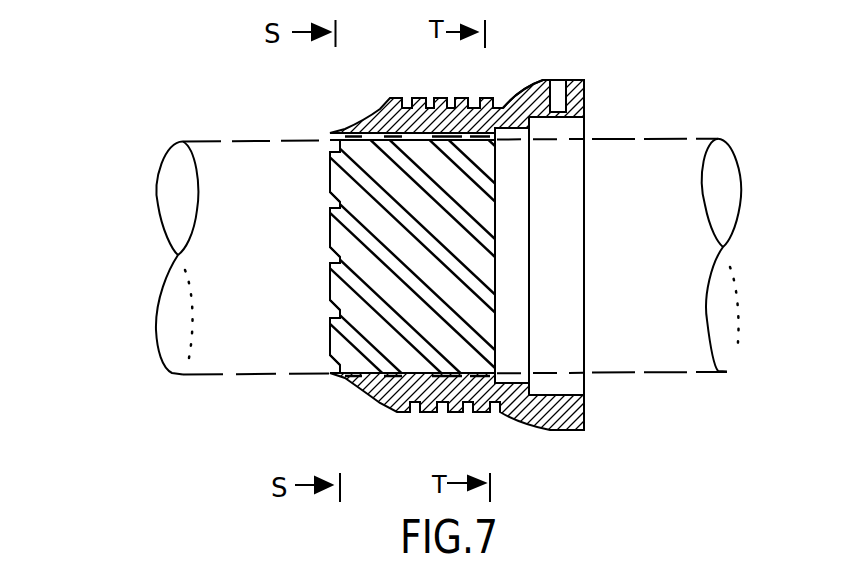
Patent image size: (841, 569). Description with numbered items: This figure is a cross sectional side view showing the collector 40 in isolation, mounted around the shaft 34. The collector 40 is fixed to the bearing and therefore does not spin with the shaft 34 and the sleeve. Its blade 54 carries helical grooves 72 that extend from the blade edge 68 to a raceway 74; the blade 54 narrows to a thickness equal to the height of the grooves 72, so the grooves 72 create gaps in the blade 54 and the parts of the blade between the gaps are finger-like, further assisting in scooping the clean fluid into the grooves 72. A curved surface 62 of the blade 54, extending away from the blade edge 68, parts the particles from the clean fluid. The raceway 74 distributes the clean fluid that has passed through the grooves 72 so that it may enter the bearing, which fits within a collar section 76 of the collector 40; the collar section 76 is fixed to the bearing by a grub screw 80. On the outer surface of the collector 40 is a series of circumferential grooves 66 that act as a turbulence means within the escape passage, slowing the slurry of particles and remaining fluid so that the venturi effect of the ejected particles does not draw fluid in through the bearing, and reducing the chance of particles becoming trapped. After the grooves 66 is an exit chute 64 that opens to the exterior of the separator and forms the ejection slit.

The shaft 34 is at (245, 254).
The collector 40 is at (138, 144).
The blade 54 is at (340, 133).
The curved surface 62 is at (373, 118).
The exit chute 64 is at (525, 92).
The circumferential grooves 66 is at (432, 98).
The blade edge 68 is at (333, 338).
The grooves 72 is at (337, 243).
The raceway 74 is at (507, 172).
The collar section 76 is at (563, 397).
The grub screw 80 is at (553, 83).